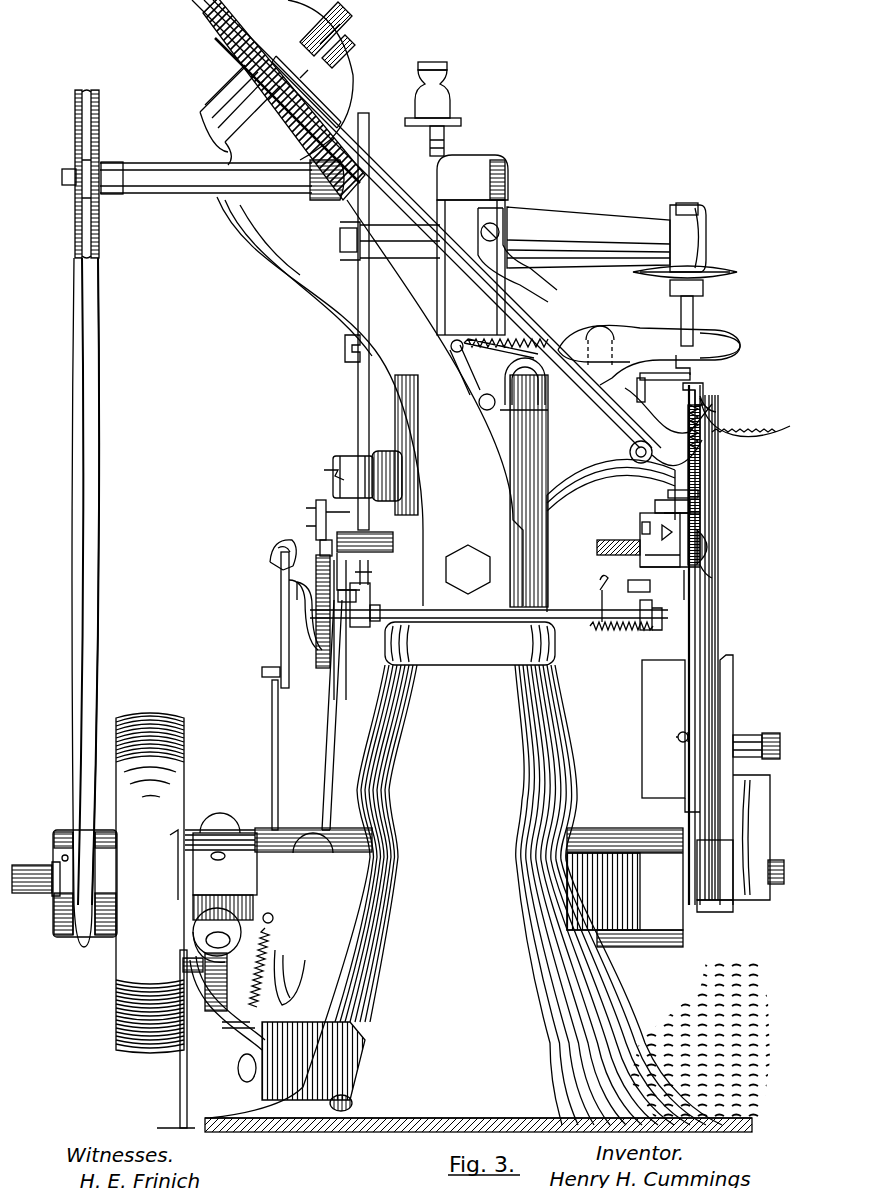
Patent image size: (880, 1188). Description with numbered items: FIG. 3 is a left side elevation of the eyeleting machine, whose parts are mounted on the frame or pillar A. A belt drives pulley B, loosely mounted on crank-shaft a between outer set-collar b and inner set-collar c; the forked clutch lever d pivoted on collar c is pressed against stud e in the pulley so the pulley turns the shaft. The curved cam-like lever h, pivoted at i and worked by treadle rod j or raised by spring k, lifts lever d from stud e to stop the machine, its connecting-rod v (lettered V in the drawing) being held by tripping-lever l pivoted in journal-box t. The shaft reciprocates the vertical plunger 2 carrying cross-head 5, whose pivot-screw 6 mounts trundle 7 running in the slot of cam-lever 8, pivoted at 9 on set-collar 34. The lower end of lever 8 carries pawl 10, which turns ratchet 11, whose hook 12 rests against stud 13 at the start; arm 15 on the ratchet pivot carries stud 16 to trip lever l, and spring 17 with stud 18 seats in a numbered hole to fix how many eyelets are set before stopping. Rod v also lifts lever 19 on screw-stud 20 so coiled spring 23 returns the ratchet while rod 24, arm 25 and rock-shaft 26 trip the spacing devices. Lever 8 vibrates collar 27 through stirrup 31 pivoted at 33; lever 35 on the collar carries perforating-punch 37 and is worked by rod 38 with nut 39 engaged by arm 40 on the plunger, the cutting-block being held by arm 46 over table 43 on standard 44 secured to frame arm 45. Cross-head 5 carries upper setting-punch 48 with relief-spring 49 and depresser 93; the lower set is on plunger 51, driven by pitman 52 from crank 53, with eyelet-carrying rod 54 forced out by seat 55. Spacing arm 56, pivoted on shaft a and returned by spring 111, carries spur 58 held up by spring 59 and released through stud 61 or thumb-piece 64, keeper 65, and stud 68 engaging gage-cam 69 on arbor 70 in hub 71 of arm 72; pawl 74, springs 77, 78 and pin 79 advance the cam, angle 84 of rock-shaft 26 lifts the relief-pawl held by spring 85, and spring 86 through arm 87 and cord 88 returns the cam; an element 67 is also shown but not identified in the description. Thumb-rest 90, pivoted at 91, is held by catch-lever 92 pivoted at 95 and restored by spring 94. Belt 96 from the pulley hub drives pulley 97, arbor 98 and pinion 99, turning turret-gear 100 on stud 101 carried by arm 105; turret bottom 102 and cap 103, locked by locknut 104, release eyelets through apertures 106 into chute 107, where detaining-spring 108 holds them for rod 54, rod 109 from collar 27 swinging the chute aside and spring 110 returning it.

The vertical plunger 2 is at (471, 267).
The cross-head 5 is at (606, 237).
The pivot-screw 6 is at (341, 237).
The trundle 7 is at (350, 232).
The cam-lever 8 is at (357, 321).
The pivot 9 is at (344, 357).
The pawl 10 is at (328, 519).
The ratchet 11 is at (330, 630).
The hook 12 is at (324, 547).
The stud 13 is at (345, 571).
The arm 15 is at (313, 612).
The stud 16 is at (266, 664).
The spring 17 is at (287, 620).
The stud 18 is at (284, 551).
The lever 19 is at (365, 566).
The screw-stud 20 is at (304, 616).
The coiled spring 23 is at (346, 598).
The rod 24 is at (365, 541).
The arm 25 is at (365, 605).
The rock-shaft 26 is at (489, 581).
The collar 27 is at (471, 491).
The stirrup 31 is at (367, 476).
The pivot 33 is at (323, 470).
The set-collar 34 is at (472, 370).
The lever 35 is at (649, 353).
The perforating-punch 37 is at (673, 365).
The actuating-rod 38 is at (430, 166).
The nut 39 is at (452, 96).
The arm 40 is at (472, 181).
The table 43 is at (706, 392).
The standard 44 is at (681, 483).
The arm 45 is at (638, 540).
The projecting-arm 46 is at (611, 518).
The upper eyelet-setting punch 48 is at (681, 310).
The relief-spring 49 is at (692, 279).
The plunger 51 is at (655, 500).
The pitman 52 is at (752, 780).
The crank 53 is at (715, 876).
The eyelet-carrying rod 54 is at (671, 739).
The seat 55 is at (625, 900).
The arm 56 is at (689, 688).
The spur 58 is at (690, 376).
The spring 59 is at (684, 427).
The stud 61 is at (718, 410).
The thumb-piece 64 is at (745, 426).
The keeper 65 is at (634, 380).
The cam 67 is at (719, 545).
The stud 68 is at (706, 575).
The toothed gage-cam 69 is at (680, 587).
The arbor 70 is at (618, 546).
The hub 71 is at (670, 553).
The arm 72 is at (650, 586).
The pawl 74 is at (698, 494).
The spring 77 is at (636, 531).
The helical spring 78 is at (660, 524).
The pin 79 is at (700, 512).
The angle 84 is at (668, 616).
The spring 85 is at (640, 604).
The helical spring 86 is at (621, 633).
The arm 87 is at (591, 599).
The cord 88 is at (613, 574).
The rest 90 is at (720, 345).
The pivot 91 is at (600, 334).
The catch-lever 92 is at (492, 403).
The depresser 93 is at (520, 255).
The helical spring 94 is at (550, 400).
The pivot 95 is at (506, 342).
The belt 96 is at (98, 602).
The pulley 97 is at (100, 174).
The arbor 98 is at (62, 178).
The pinion 99 is at (327, 187).
The turret-gear 100 is at (232, 103).
The fixed stud 101 is at (353, 16).
The turret bottom 102 is at (284, 100).
The turret cap 103 is at (312, 80).
The locknut 104 is at (352, 57).
The arm 105 is at (370, 401).
The apertures 106 is at (295, 64).
The chute 107 is at (426, 224).
The detaining-spring 108 is at (668, 434).
The rod 109 is at (400, 258).
The spring 110 is at (456, 352).
The helical spring 111 is at (667, 736).
The frame A is at (478, 877).
The pulley B is at (150, 883).
The connecting-rod V is at (362, 718).
The crank-shaft a is at (36, 879).
The outer set-collar b is at (85, 883).
The inner set-collar c is at (225, 876).
The forked clutch lever d is at (263, 887).
The stud e is at (183, 960).
The cam-like lever h is at (223, 1024).
The pivot i is at (291, 1082).
The rod j is at (261, 1039).
The spring k is at (227, 1001).
The tripping-lever l is at (283, 755).
The journal-box t is at (434, 865).
The connecting-rod v is at (277, 960).